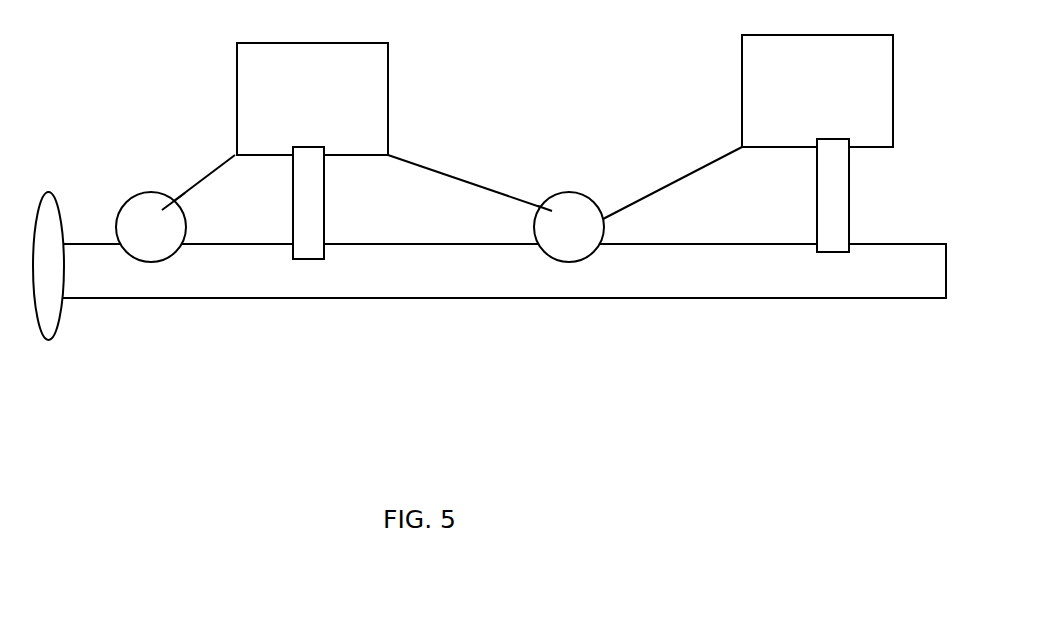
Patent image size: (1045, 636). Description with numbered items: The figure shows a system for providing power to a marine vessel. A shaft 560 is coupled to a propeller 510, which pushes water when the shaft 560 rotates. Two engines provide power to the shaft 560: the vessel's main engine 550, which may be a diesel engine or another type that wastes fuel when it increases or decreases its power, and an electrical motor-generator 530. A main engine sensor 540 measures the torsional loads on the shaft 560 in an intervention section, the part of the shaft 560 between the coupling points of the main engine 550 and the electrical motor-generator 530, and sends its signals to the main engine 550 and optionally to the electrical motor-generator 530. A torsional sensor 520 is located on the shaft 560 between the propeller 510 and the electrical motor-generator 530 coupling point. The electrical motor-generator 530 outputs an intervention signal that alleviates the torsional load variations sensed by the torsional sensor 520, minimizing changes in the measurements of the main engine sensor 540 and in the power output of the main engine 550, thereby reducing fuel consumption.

The propeller 510 is at (51, 286).
The torsional sensor 520 is at (151, 208).
The electrical motor-generator 530 is at (283, 151).
The main engine sensor 540 is at (569, 209).
The main engine 550 is at (785, 143).
The shaft 560 is at (504, 294).